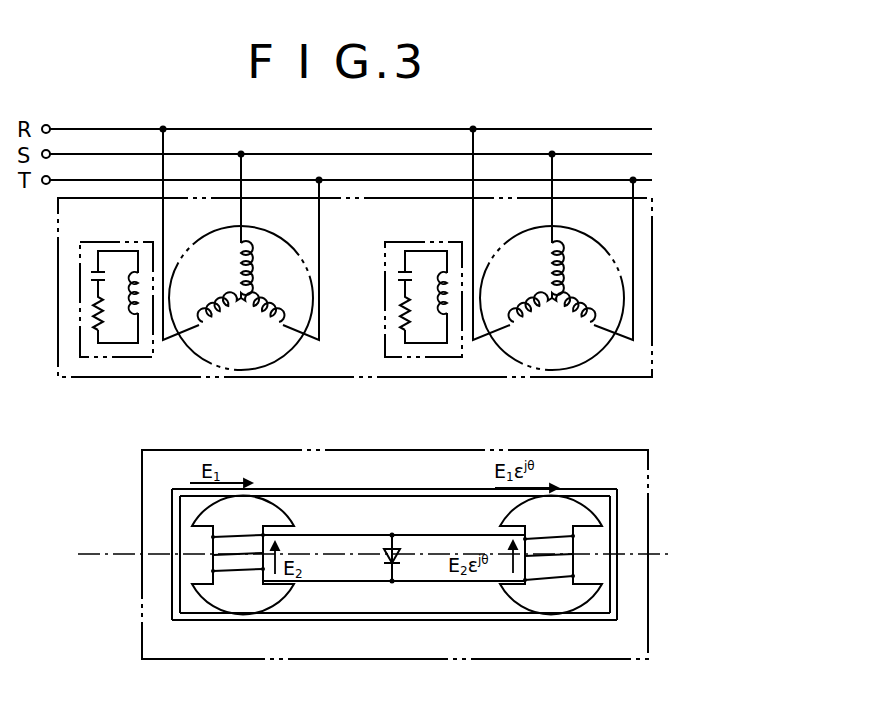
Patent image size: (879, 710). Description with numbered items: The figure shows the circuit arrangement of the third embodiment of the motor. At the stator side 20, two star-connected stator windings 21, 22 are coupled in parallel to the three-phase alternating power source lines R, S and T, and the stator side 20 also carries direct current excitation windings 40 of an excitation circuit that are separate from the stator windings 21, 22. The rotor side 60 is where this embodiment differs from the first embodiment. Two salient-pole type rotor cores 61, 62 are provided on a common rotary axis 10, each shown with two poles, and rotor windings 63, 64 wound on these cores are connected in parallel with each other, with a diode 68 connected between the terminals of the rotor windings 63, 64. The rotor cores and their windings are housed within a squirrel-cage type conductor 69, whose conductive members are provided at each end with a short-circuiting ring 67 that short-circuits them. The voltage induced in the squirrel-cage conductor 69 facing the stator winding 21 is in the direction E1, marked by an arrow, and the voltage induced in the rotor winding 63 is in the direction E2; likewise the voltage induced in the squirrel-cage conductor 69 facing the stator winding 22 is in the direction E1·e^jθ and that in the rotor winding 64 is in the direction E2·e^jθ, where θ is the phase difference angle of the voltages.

The rotary axis 10 is at (108, 556).
The stator side 20 is at (654, 244).
The stator winding 21 is at (296, 240).
The stator winding 22 is at (488, 260).
The direct current excitation winding 40 is at (118, 213).
The rotor side 60 is at (653, 490).
The salient-pole type rotor core 61 is at (253, 600).
The salient-pole type rotor core 62 is at (572, 600).
The rotor winding 63 is at (248, 530).
The rotor winding 64 is at (557, 537).
The short-circuiting ring 67 is at (172, 512).
The diode 68 is at (405, 548).
The squirrel-cage type conductor 69 is at (470, 490).